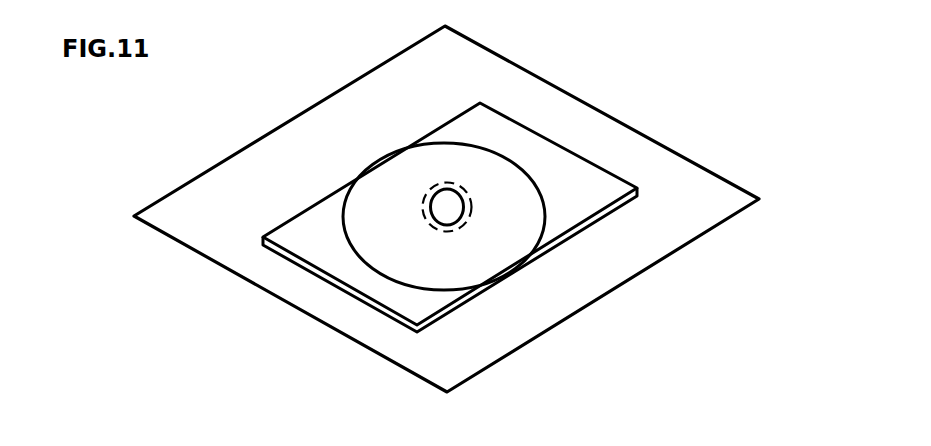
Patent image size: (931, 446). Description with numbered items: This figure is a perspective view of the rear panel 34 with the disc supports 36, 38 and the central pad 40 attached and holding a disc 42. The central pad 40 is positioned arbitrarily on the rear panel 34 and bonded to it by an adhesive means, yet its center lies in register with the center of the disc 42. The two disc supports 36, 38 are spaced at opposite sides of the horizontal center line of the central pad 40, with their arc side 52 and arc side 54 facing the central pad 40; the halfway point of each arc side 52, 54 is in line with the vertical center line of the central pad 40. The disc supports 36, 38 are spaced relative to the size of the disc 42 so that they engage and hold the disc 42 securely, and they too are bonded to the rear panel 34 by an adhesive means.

The rear panel 34 is at (733, 193).
The disc support 36 is at (600, 177).
The disc support 38 is at (425, 305).
The central pad 40 is at (466, 226).
The disc 42 is at (350, 233).
The arc side 52 is at (463, 147).
The arc side 54 is at (400, 281).